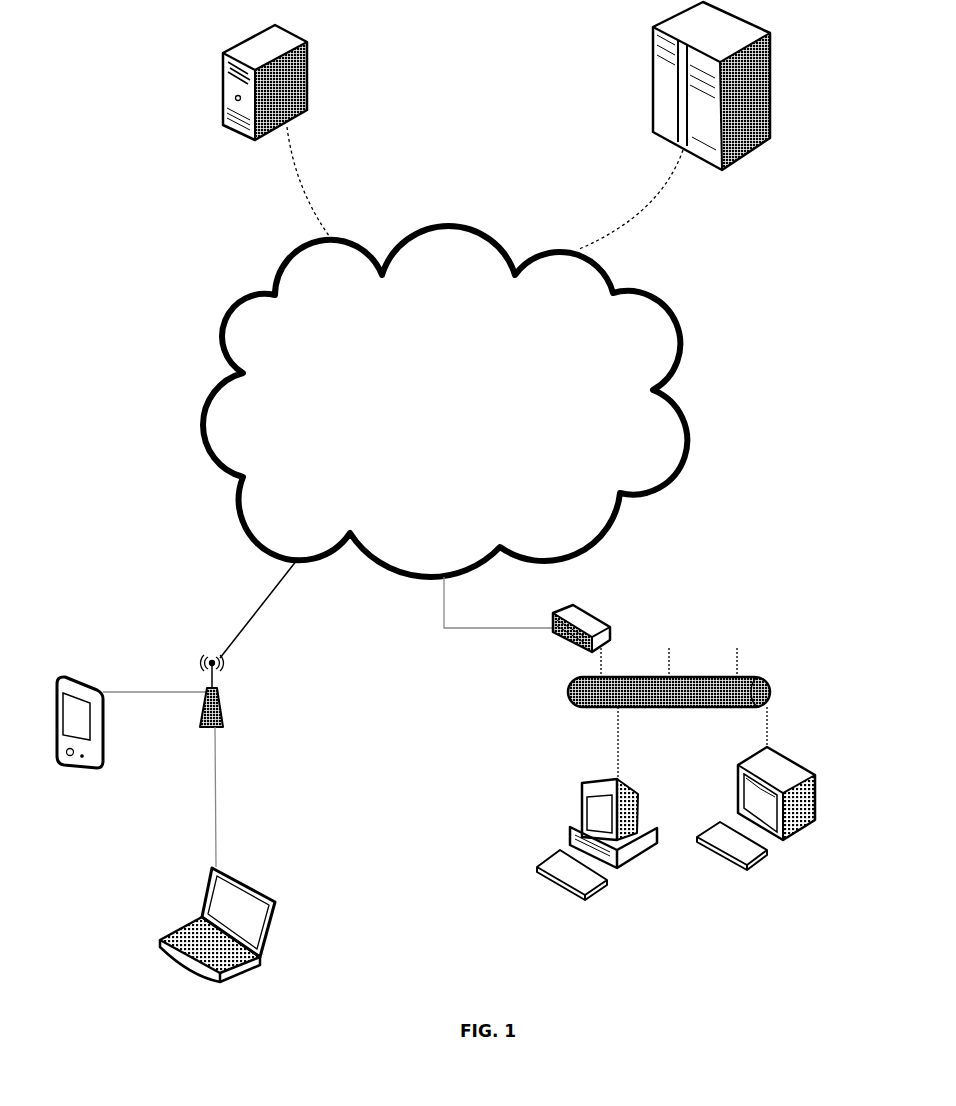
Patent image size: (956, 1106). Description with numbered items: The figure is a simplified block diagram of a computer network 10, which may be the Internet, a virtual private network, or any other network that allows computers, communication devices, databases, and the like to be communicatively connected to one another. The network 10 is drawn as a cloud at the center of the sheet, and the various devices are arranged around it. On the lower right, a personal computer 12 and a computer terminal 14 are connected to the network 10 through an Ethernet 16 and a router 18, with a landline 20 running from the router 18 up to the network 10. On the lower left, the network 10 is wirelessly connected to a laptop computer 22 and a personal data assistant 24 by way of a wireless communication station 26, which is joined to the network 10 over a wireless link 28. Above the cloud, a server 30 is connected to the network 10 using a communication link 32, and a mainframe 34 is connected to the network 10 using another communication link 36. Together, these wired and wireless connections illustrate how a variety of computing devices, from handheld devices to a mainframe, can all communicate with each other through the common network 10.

The computer network 10 is at (175, 300).
The personal computer 12 is at (575, 823).
The computer terminal 14 is at (802, 768).
The Ethernet 16 is at (765, 675).
The router 18 is at (612, 627).
The landline 20 is at (480, 630).
The laptop computer 22 is at (237, 973).
The personal data assistant 24 is at (82, 680).
The wireless communication station 26 is at (227, 723).
The wireless link 28 is at (250, 615).
The server 30 is at (307, 82).
The communication link 32 is at (313, 217).
The mainframe 34 is at (733, 162).
The communication link 36 is at (655, 200).